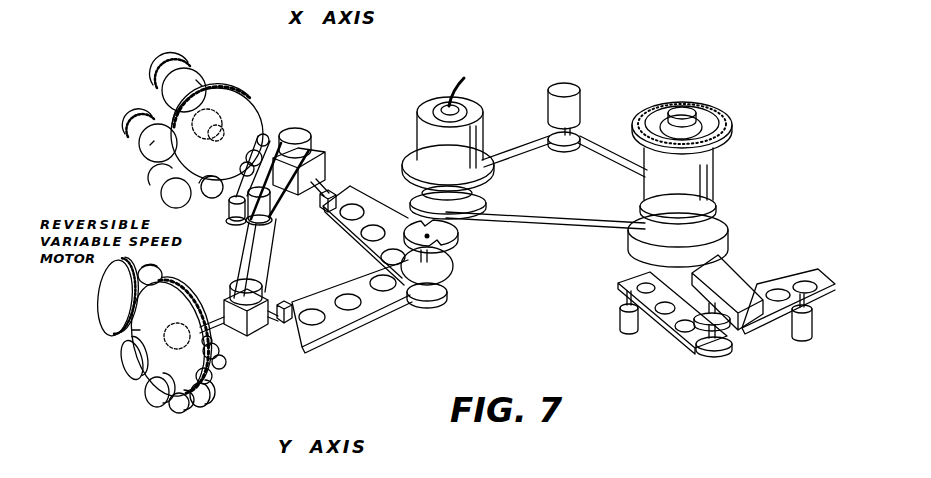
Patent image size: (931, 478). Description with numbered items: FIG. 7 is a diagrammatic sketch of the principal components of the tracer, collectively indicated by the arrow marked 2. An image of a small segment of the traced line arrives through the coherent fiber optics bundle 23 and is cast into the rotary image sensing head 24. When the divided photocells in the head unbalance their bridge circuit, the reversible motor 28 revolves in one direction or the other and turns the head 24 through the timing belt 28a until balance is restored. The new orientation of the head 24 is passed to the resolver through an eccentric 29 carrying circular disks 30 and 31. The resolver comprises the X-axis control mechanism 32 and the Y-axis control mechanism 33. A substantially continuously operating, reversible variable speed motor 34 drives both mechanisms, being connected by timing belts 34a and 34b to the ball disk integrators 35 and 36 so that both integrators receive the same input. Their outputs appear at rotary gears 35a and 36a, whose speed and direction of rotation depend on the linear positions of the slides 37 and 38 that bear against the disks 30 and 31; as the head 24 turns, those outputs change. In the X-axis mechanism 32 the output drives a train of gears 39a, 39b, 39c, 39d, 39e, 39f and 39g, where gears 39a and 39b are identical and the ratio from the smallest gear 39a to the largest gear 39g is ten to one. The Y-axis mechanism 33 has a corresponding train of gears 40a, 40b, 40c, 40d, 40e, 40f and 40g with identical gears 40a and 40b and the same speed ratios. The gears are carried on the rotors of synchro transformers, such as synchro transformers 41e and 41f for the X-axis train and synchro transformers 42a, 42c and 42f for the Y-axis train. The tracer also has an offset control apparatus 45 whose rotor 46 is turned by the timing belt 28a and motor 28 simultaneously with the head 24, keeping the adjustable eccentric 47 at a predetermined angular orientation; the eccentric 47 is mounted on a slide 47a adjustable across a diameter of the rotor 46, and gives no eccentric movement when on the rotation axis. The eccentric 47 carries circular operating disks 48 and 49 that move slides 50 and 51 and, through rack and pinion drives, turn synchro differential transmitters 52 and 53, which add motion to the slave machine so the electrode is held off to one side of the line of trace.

The drive assembly 2 is at (137, 62).
The coherent fiber optics bundle 23 is at (457, 82).
The rotary image sensing head 24 is at (473, 108).
The reversible motor 28 is at (577, 90).
The timing belt 28a is at (519, 152).
The eccentric 29 is at (446, 258).
The circular disk 30 is at (443, 310).
The circular disk 31 is at (452, 273).
The X-axis control mechanism 32 is at (304, 90).
The Y-axis control mechanism 33 is at (240, 405).
The variable speed motor 34 is at (272, 222).
The timing belt 34a is at (267, 248).
The timing belt 34b is at (326, 158).
The ball disk integrator 35 is at (307, 144).
The rotary gear 35a is at (274, 134).
The ball disk integrator 36 is at (260, 338).
The rotary gear 36a is at (209, 318).
The slide 37 is at (347, 196).
The slide 38 is at (375, 303).
The gear 39a is at (239, 155).
The gear 39b is at (199, 139).
The gear 39c is at (214, 198).
The gear 39d is at (170, 194).
The gear 39e is at (152, 143).
The gear 39f is at (200, 82).
The gear 39g is at (239, 110).
The gear 40a is at (171, 337).
The gear 40b is at (213, 378).
The gear 40c is at (180, 418).
The gear 40d is at (153, 407).
The gear 40e is at (128, 367).
The gear 40f is at (112, 292).
The gear 40g is at (140, 330).
The synchro transformer 41e is at (136, 124).
The synchro transformer 41f is at (170, 64).
The synchro transformer 42a is at (222, 353).
The synchro transformer 42c is at (210, 406).
The synchro transformer 42f is at (163, 278).
The offset control apparatus 45 is at (750, 177).
The rotor 46 is at (697, 177).
The adjustable eccentric 47 is at (705, 352).
The slide 47a is at (742, 280).
The circular operating disk 48 is at (730, 330).
The circular operating disk 49 is at (729, 355).
The slide 50 is at (822, 272).
The slide 51 is at (667, 333).
The synchro differential transmitter 52 is at (805, 338).
The synchro differential transmitter 53 is at (627, 332).